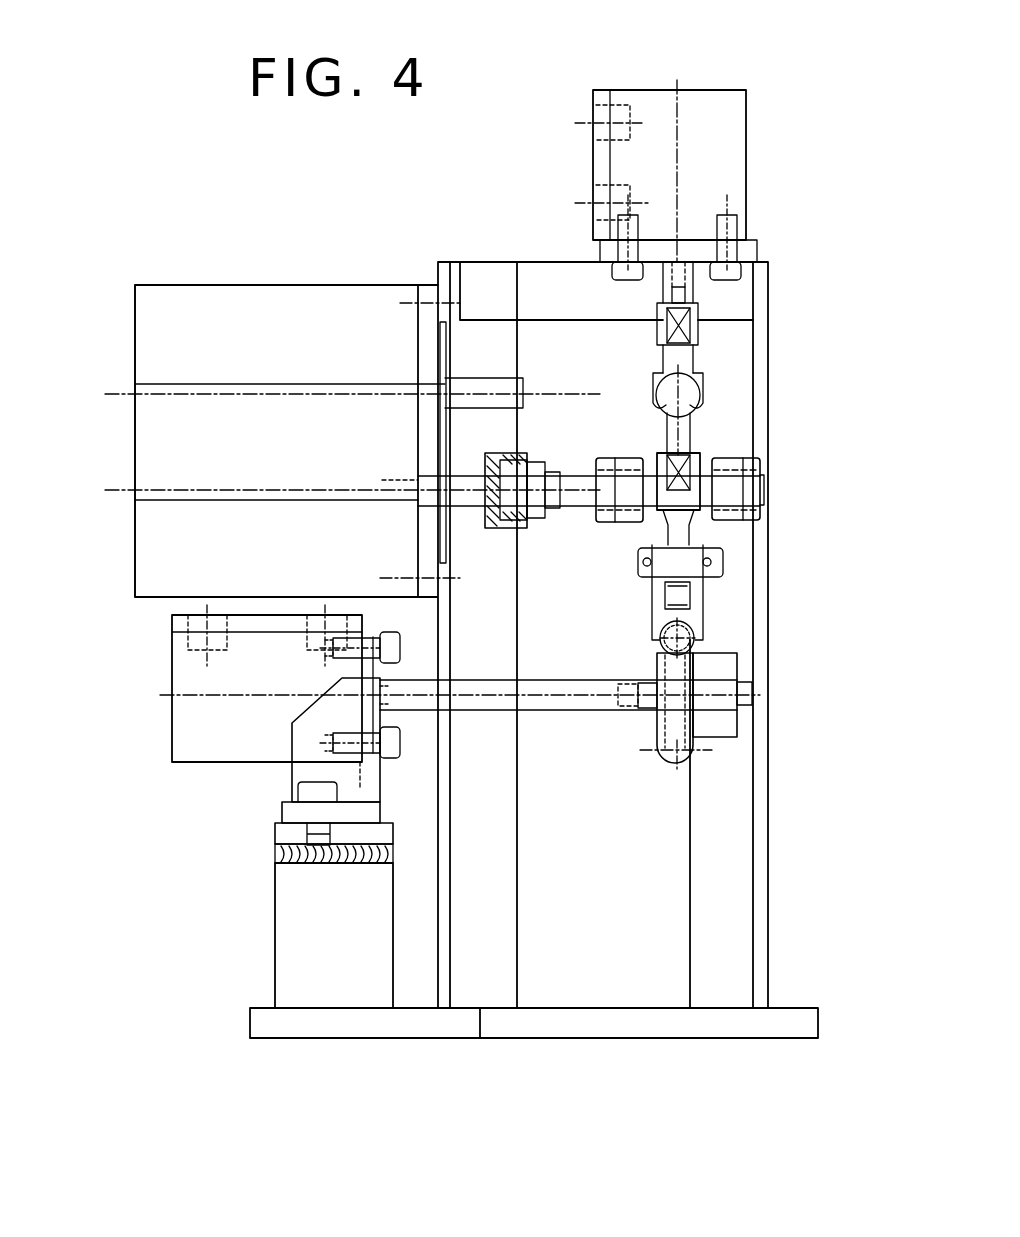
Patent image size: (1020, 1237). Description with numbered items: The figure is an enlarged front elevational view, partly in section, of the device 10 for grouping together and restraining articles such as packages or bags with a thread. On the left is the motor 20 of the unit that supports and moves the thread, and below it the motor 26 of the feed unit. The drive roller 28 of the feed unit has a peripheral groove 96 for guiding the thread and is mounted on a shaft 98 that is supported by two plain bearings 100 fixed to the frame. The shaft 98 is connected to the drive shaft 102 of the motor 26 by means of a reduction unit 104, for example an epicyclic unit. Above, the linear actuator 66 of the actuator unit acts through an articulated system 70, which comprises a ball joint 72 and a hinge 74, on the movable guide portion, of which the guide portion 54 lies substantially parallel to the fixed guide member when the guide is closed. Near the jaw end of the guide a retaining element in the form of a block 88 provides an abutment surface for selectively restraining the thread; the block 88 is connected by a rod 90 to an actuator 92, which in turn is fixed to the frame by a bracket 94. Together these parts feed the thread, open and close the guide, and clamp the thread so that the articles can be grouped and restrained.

The device 10 is at (93, 237).
The motor 20 is at (204, 298).
The motor 26 is at (148, 549).
The drive roller 28 is at (664, 476).
The guide portion 54 is at (697, 632).
The linear actuator 66 is at (732, 134).
The articulated system 70 is at (742, 358).
The ball joint 72 is at (706, 395).
The hinge 74 is at (700, 547).
The block 88 is at (735, 680).
The rod 90 is at (562, 712).
The actuator 92 is at (196, 748).
The bracket 94 is at (298, 762).
The peripheral groove 96 is at (690, 432).
The shaft 98 is at (578, 483).
The plain bearings 100 is at (622, 514).
The drive shaft 102 is at (467, 478).
The reduction unit 104 is at (497, 523).